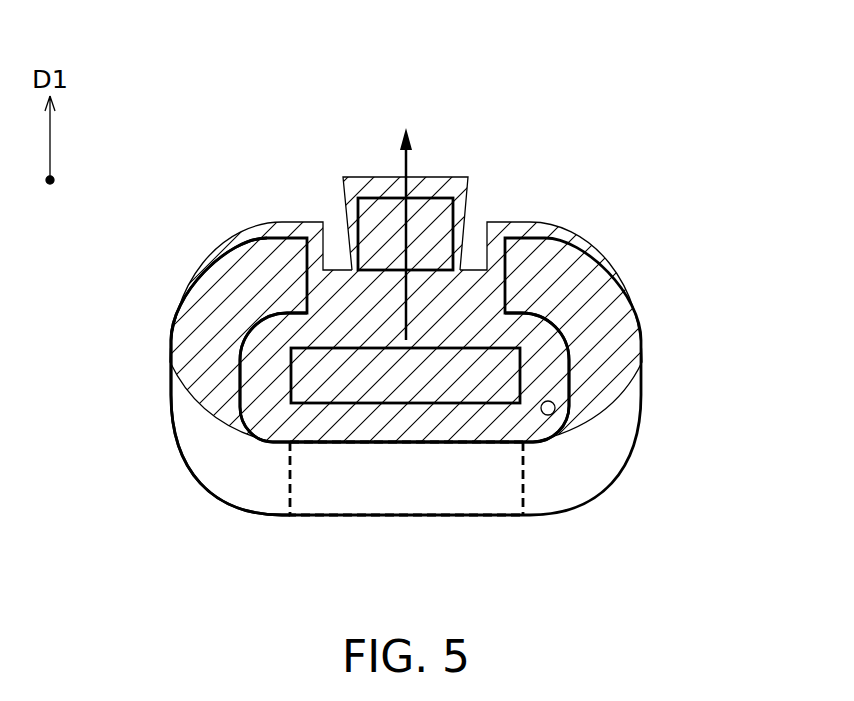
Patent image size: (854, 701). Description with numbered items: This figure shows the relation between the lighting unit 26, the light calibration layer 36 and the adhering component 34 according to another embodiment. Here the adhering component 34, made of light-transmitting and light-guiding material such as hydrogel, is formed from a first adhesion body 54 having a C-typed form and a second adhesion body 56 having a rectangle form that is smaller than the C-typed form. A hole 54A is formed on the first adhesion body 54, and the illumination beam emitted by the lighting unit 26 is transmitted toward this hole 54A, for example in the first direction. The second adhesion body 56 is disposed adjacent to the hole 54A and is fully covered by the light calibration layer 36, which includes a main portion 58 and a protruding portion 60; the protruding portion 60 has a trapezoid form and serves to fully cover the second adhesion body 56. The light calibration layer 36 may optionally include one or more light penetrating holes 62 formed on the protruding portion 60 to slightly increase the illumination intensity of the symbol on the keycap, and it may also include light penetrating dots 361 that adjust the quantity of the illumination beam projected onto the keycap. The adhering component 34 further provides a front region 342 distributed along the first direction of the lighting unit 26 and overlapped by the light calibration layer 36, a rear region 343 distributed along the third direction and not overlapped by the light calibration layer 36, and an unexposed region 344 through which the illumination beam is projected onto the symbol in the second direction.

The adhering component 34 is at (406, 376).
The first adhesion body 54 is at (183, 402).
The hole 54A is at (418, 275).
The second adhesion body 56 is at (350, 221).
The main portion 58 is at (542, 233).
The protruding portion 60 is at (466, 213).
The light penetrating hole 62 is at (368, 204).
The light calibration layer 36 is at (612, 130).
The front region 342 is at (538, 273).
The rear region 343 is at (522, 468).
The unexposed region 344 is at (343, 493).
The light penetrating dot 361 is at (555, 406).
The lighting unit 26 is at (425, 378).